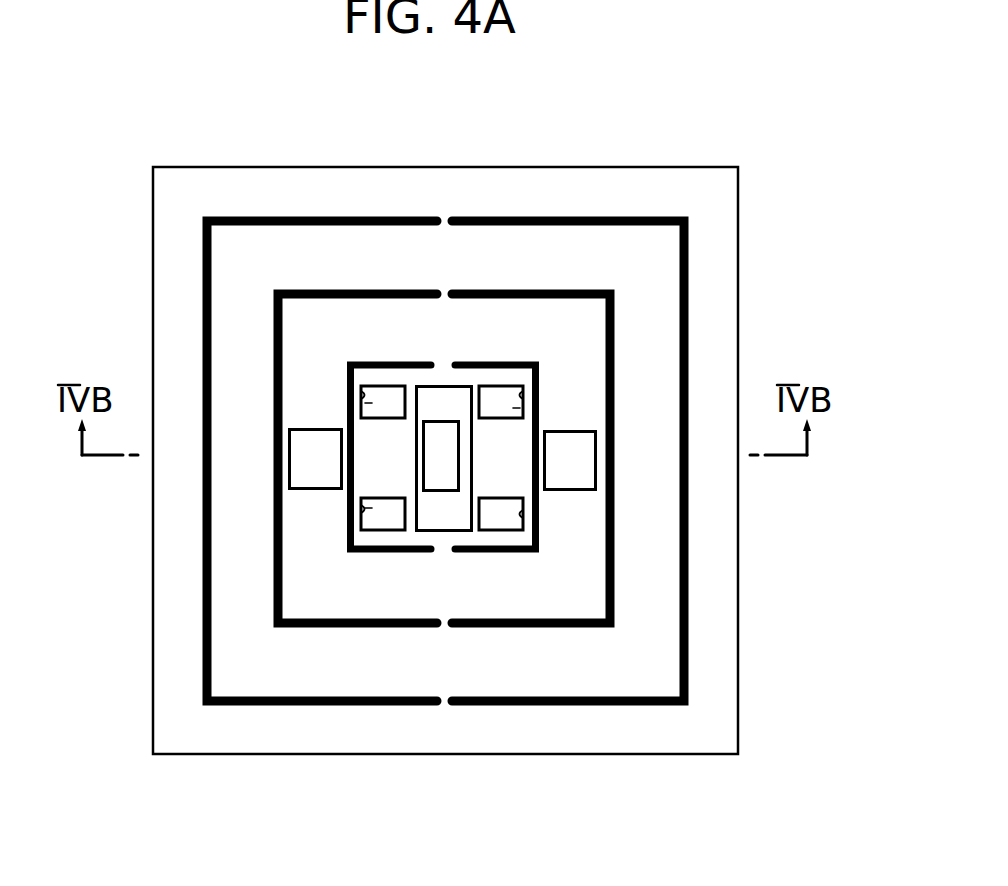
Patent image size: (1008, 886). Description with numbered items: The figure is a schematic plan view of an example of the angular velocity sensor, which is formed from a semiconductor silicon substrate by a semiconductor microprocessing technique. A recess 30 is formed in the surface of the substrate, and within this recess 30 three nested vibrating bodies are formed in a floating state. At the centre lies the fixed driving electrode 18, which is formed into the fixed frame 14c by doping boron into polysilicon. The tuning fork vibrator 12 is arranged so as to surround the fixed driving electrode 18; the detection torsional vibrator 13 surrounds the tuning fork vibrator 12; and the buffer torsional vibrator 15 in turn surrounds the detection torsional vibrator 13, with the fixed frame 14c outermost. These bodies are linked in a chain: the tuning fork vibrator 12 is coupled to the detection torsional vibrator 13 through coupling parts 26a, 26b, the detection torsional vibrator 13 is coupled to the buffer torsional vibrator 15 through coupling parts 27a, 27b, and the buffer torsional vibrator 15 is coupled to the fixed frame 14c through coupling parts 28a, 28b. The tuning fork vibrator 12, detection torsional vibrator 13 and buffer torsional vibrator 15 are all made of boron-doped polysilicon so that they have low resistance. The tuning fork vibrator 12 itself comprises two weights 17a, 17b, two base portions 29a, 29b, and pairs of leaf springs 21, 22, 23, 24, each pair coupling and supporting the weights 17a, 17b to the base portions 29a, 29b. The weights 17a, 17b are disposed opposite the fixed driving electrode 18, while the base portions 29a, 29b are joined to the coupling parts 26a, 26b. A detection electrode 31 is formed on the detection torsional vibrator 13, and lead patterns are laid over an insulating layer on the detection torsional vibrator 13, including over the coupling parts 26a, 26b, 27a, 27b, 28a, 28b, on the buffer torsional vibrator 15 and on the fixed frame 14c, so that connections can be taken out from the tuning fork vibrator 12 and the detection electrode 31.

The tuning fork vibrator 12 is at (508, 472).
The detection torsional vibrator 13 is at (588, 332).
The fixed frame 14c is at (668, 182).
The buffer torsional vibrator 15 is at (633, 260).
The weight 17a is at (370, 437).
The weight 17b is at (507, 487).
The fixed driving electrode 18 is at (442, 440).
The leaf spring 21 is at (358, 388).
The leaf spring 22 is at (335, 545).
The leaf spring 23 is at (490, 387).
The leaf spring 24 is at (482, 517).
The coupling part 26a is at (446, 365).
The coupling part 26b is at (442, 548).
The coupling part 27a is at (445, 296).
The coupling part 27b is at (443, 627).
The coupling part 28a is at (443, 222).
The coupling part 28b is at (445, 707).
The base portion 29a is at (505, 378).
The base portion 29b is at (378, 540).
The recess 30 is at (372, 403).
The detection electrode 31 is at (293, 473).